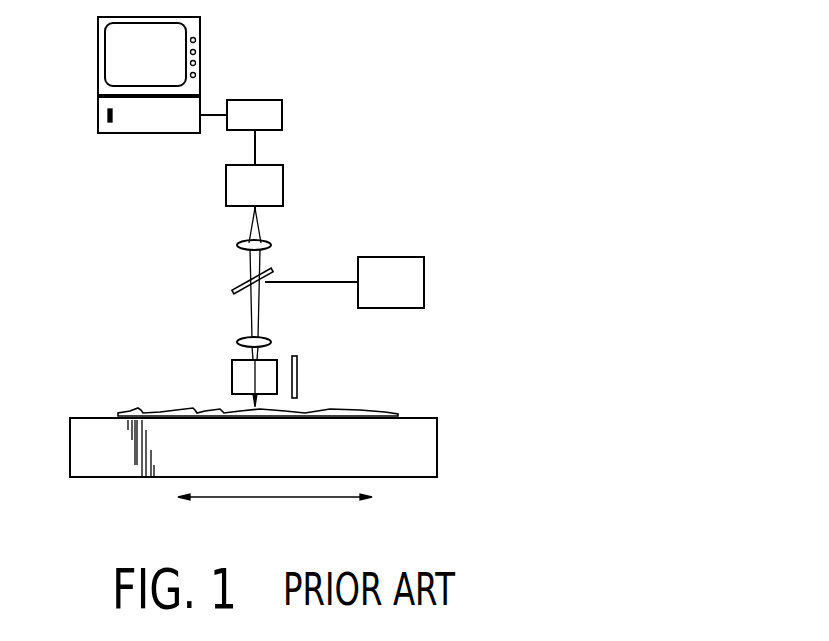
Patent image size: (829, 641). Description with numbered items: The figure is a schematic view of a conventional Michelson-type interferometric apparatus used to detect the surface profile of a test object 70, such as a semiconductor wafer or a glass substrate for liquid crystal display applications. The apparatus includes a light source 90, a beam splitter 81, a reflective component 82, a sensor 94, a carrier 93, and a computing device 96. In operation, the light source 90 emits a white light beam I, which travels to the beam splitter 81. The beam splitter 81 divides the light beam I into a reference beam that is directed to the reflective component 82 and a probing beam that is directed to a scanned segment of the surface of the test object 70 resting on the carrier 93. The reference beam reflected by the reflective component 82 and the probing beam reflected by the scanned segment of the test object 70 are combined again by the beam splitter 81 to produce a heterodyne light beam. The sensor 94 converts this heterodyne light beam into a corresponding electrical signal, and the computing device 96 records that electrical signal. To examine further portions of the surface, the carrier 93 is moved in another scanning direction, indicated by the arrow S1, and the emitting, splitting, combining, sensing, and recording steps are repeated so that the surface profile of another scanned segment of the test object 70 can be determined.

The computing device 96 is at (118, 52).
The sensor 94 is at (277, 181).
The white light beam I is at (307, 282).
The light source 90 is at (415, 280).
The beam splitter 81 is at (232, 377).
The reflective component 82 is at (297, 378).
The test object 70 is at (360, 410).
The carrier 93 is at (423, 448).
The scanning direction arrow S1 is at (277, 498).